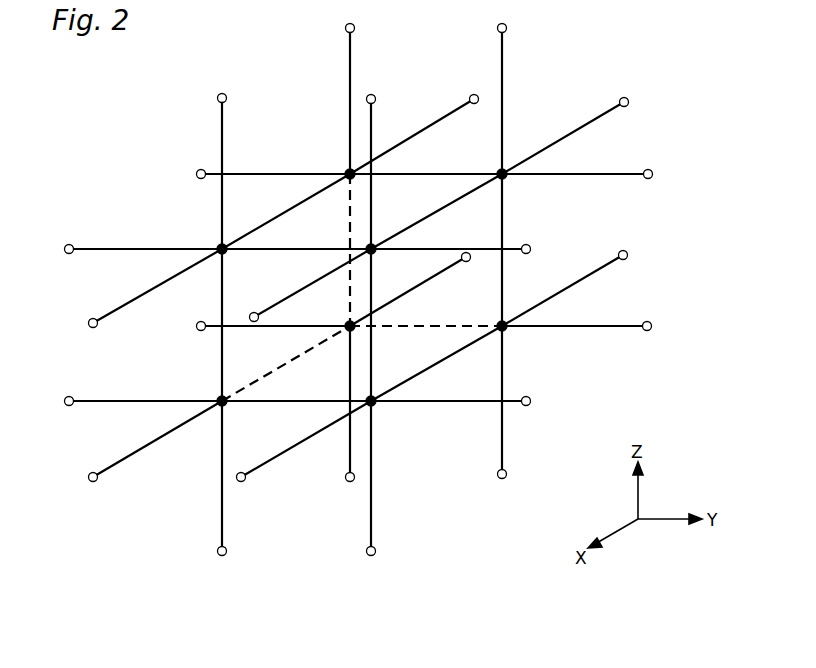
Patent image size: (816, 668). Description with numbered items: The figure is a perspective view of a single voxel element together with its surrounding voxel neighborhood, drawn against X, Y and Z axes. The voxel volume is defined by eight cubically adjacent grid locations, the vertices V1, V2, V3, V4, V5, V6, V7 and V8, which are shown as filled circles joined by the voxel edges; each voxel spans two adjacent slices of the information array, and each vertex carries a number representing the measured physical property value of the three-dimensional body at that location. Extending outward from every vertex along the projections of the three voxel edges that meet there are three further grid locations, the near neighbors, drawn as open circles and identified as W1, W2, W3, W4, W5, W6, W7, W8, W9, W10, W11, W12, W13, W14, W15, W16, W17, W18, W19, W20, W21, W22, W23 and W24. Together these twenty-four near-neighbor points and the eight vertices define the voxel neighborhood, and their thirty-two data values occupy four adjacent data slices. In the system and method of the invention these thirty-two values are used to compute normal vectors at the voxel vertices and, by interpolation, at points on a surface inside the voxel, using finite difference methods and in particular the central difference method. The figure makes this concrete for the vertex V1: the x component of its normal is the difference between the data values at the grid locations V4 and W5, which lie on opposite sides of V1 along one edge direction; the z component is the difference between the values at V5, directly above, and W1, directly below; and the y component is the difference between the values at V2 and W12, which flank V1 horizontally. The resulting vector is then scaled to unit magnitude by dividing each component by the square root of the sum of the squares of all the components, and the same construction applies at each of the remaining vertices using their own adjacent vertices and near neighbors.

The voxel vertex V1 is at (226, 404).
The voxel vertex V2 is at (375, 404).
The voxel vertex V3 is at (505, 330).
The voxel vertex V4 is at (347, 323).
The voxel vertex V5 is at (219, 246).
The voxel vertex V6 is at (374, 253).
The voxel vertex V7 is at (505, 178).
The voxel vertex V8 is at (348, 171).
The near neighbor grid location W1 is at (224, 555).
The near neighbor grid location W2 is at (373, 555).
The near neighbor grid location W3 is at (502, 479).
The near neighbor grid location W4 is at (348, 482).
The near neighbor grid location W5 is at (96, 481).
The near neighbor grid location W6 is at (244, 481).
The near neighbor grid location W7 is at (531, 402).
The near neighbor grid location W8 is at (650, 330).
The near neighbor grid location W9 is at (627, 258).
The near neighbor grid location W10 is at (466, 262).
The near neighbor grid location W11 is at (198, 330).
The near neighbor grid location W12 is at (69, 405).
The near neighbor grid location W13 is at (91, 327).
The near neighbor grid location W14 is at (254, 312).
The near neighbor grid location W15 is at (528, 253).
The near neighbor grid location W16 is at (651, 178).
The near neighbor grid location W17 is at (628, 105).
The near neighbor grid location W18 is at (474, 94).
The near neighbor grid location W19 is at (199, 178).
The near neighbor grid location W20 is at (69, 253).
The near neighbor grid location W21 is at (226, 100).
The near neighbor grid location W22 is at (374, 95).
The near neighbor grid location W23 is at (507, 30).
The near neighbor grid location W24 is at (355, 30).